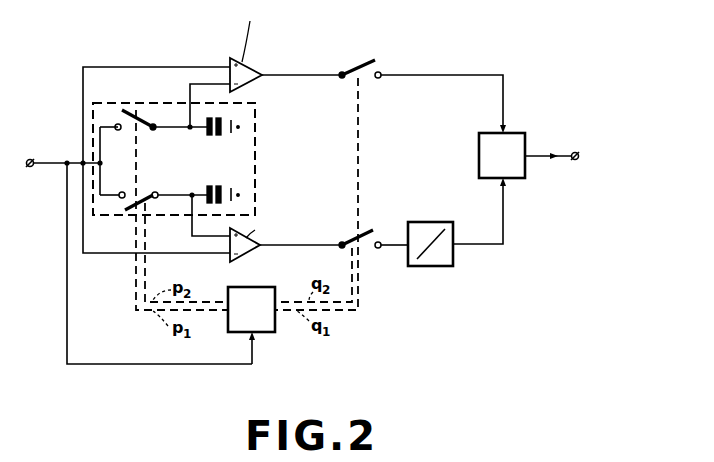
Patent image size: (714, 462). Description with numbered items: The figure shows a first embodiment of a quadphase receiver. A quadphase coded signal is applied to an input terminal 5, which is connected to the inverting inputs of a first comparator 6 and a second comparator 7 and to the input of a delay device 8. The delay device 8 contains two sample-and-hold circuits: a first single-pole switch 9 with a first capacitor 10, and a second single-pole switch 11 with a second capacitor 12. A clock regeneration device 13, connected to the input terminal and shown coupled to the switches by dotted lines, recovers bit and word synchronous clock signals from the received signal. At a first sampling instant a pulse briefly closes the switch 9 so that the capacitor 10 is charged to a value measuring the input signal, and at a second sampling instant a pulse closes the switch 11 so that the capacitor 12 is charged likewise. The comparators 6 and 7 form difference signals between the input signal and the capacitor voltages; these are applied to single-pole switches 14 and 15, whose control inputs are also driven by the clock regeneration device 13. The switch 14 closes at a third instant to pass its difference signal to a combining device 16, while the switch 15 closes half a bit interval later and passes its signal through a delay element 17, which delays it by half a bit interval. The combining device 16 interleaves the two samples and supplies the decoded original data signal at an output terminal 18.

The input terminal 5 is at (30, 167).
The first comparator 6 is at (250, 66).
The second comparator 7 is at (254, 250).
The delay device 8 is at (257, 153).
The first single-pole switch 9 is at (143, 110).
The first capacitor 10 is at (205, 132).
The second single-pole switch 11 is at (141, 193).
The second capacitor 12 is at (209, 185).
The clock regeneration device 13 is at (262, 334).
The single-pole switch 14 is at (349, 68).
The single-pole switch 15 is at (366, 227).
The combining device 16 is at (518, 180).
The delay element 17 is at (443, 267).
The output terminal 18 is at (576, 164).